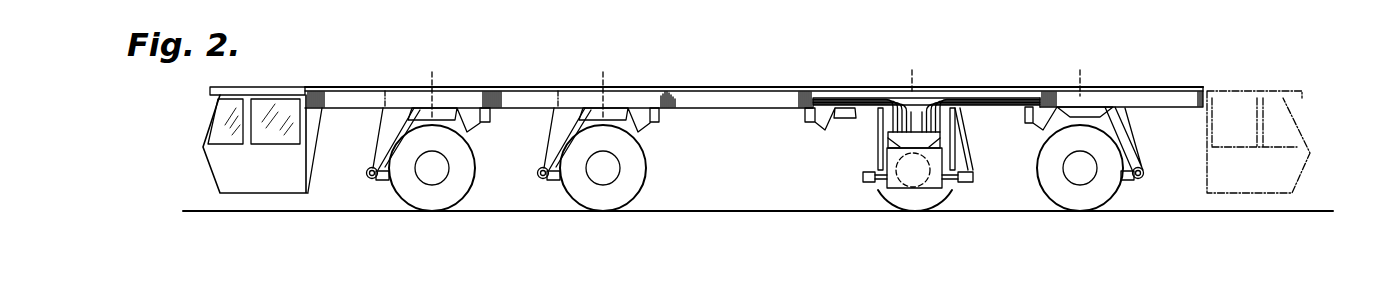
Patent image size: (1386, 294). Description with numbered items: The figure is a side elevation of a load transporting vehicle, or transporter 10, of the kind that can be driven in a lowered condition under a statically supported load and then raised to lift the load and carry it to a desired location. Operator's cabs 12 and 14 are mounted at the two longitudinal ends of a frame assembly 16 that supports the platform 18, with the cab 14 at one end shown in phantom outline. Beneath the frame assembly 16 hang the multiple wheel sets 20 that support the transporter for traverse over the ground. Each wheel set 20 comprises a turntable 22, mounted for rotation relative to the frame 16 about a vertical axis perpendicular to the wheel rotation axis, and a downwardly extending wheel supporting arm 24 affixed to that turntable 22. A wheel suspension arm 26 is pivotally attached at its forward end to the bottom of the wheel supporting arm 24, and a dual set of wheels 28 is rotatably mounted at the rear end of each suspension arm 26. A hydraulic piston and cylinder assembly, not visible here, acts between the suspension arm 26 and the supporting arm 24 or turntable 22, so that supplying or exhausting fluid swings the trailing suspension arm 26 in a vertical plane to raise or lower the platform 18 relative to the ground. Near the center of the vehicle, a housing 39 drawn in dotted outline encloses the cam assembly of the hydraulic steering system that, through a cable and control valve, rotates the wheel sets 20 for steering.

The transporter 10 is at (1210, 52).
The operator's cab 12 is at (207, 129).
The operator's cab 14 is at (1300, 127).
The frame assembly 16 is at (745, 97).
The platform 18 is at (527, 86).
The wheel set 20 is at (471, 197).
The turntable 22 is at (440, 112).
The wheel supporting arm 24 is at (378, 136).
The wheel suspension arm 26 is at (383, 178).
The dual set of wheels 28 is at (438, 197).
The housing 39 is at (899, 195).